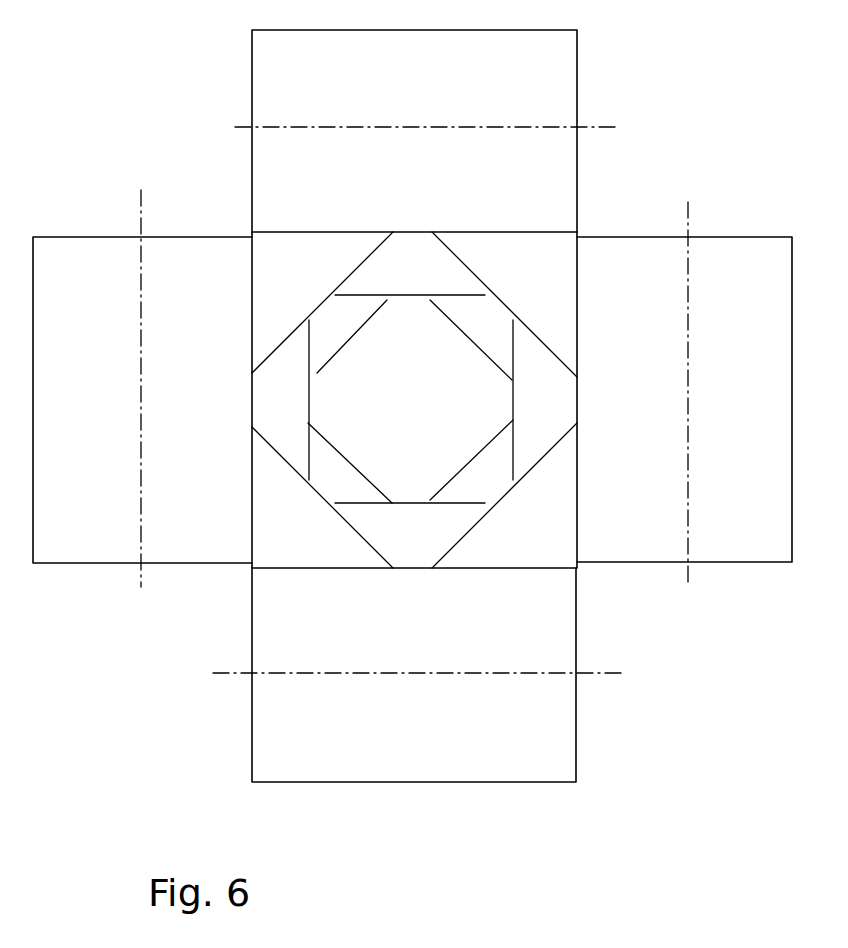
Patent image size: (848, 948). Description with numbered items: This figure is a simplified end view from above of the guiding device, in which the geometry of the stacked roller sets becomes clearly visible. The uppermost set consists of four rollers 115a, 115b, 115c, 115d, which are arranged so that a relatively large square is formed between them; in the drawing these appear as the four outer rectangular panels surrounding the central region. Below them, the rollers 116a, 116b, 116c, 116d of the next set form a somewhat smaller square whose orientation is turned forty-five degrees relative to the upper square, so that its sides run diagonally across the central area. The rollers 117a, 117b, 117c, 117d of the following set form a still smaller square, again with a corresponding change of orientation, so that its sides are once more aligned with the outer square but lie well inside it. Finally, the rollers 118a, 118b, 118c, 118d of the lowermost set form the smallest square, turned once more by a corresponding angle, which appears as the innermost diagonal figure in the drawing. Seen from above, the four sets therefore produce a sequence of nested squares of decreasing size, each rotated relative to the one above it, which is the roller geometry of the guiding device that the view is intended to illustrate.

The roller 115a is at (56, 557).
The roller 115b is at (565, 756).
The roller 115c is at (752, 249).
The roller 115d is at (246, 48).
The roller 116a is at (258, 493).
The roller 116b is at (502, 555).
The roller 116c is at (555, 295).
The roller 116d is at (340, 250).
The roller 117a is at (390, 545).
The roller 117b is at (550, 417).
The roller 117c is at (434, 262).
The roller 117d is at (283, 373).
The roller 118a is at (345, 487).
The roller 118b is at (494, 478).
The roller 118c is at (485, 318).
The roller 118d is at (337, 320).